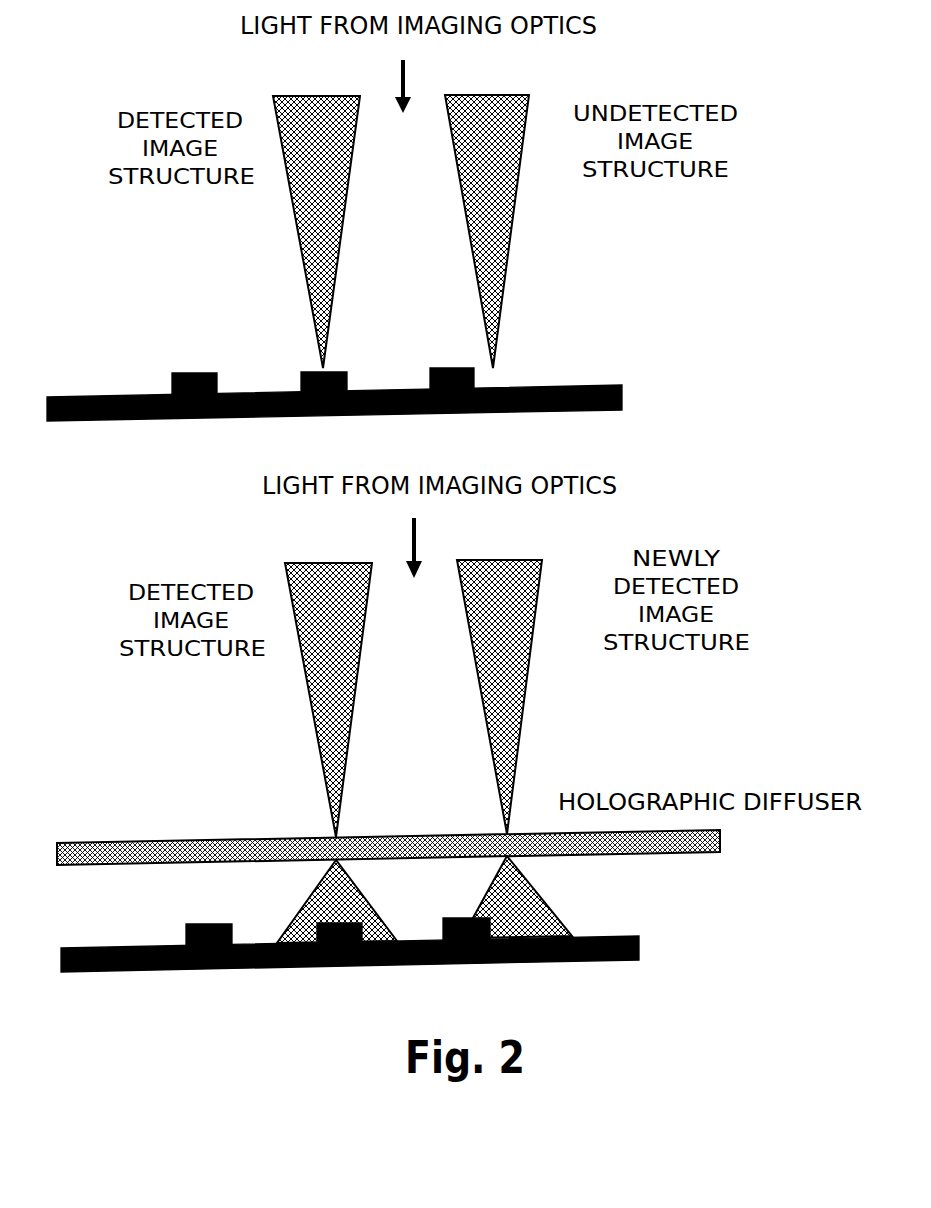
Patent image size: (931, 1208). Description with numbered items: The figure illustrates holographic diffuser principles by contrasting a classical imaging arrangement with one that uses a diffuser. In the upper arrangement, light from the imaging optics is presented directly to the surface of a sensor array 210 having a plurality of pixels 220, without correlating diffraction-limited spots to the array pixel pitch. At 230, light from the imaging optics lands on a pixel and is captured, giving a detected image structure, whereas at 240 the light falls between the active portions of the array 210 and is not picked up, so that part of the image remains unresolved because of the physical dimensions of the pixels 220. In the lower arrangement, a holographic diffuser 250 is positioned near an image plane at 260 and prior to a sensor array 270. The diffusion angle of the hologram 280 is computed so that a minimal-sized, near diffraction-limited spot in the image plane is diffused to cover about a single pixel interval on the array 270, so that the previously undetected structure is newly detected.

The sensor array 210 is at (613, 380).
The pixels 220 is at (183, 362).
The captured light from imaging optics 230 is at (333, 362).
The undetected light from imaging optics 240 is at (503, 345).
The holographic diffuser 250 is at (198, 836).
The image plane 260 is at (348, 832).
The sensor array 270 is at (165, 940).
The hologram 280 is at (553, 897).